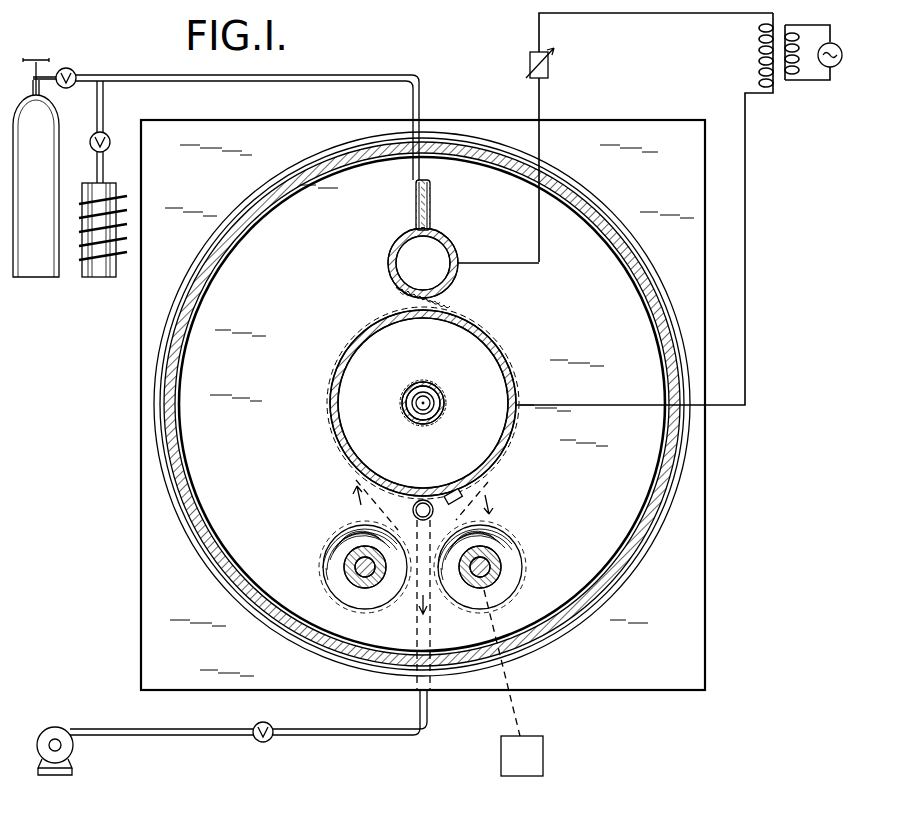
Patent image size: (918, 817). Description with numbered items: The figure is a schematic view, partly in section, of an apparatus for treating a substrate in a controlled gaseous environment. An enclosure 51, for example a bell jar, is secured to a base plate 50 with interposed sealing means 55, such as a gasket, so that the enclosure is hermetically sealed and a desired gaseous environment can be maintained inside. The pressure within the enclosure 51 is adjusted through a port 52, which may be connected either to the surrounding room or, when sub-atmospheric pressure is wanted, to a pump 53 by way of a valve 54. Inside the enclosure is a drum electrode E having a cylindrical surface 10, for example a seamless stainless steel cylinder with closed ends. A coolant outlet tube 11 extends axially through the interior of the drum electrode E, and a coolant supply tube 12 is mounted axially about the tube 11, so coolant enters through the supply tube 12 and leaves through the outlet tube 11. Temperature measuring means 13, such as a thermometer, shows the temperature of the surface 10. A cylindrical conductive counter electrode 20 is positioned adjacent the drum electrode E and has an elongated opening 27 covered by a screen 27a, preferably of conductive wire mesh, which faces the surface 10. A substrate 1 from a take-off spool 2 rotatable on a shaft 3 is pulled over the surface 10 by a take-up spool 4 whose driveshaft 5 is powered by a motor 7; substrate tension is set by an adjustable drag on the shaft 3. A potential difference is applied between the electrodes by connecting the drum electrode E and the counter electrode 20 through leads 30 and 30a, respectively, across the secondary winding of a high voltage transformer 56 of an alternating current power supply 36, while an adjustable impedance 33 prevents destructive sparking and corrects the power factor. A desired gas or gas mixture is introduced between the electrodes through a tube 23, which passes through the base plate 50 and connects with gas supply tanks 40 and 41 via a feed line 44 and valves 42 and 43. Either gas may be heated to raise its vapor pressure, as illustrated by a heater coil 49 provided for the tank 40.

The substrate 1 is at (372, 512).
The take-off spool 2 is at (355, 563).
The shaft 3 is at (360, 573).
The take-up spool 4 is at (490, 547).
The driveshaft 5 is at (490, 565).
The motor 7 is at (543, 752).
The cylindrical surface 10 is at (330, 417).
The coolant outlet tube 11 is at (413, 410).
The coolant supply tube 12 is at (440, 418).
The temperature measuring means 13 is at (460, 500).
The counter electrode 20 is at (390, 259).
The tube 23 is at (430, 205).
The elongated opening 27 is at (421, 292).
The screen 27a is at (450, 294).
The lead 30 is at (541, 98).
The lead 30a is at (746, 173).
The adjustable impedance 33 is at (528, 60).
The alternating current power supply 36 is at (836, 65).
The gas supply tank 40 is at (110, 272).
The gas supply tank 41 is at (37, 268).
The valve 42 is at (93, 134).
The valve 43 is at (68, 67).
The feed line 44 is at (360, 78).
The heater coil 49 is at (92, 255).
The base plate 50 is at (697, 562).
The enclosure 51 is at (627, 566).
The port 52 is at (424, 500).
The pump 53 is at (57, 733).
The valve 54 is at (263, 744).
The sealing means 55 is at (617, 585).
The high voltage transformer 56 is at (789, 95).
The drum electrode E is at (500, 440).